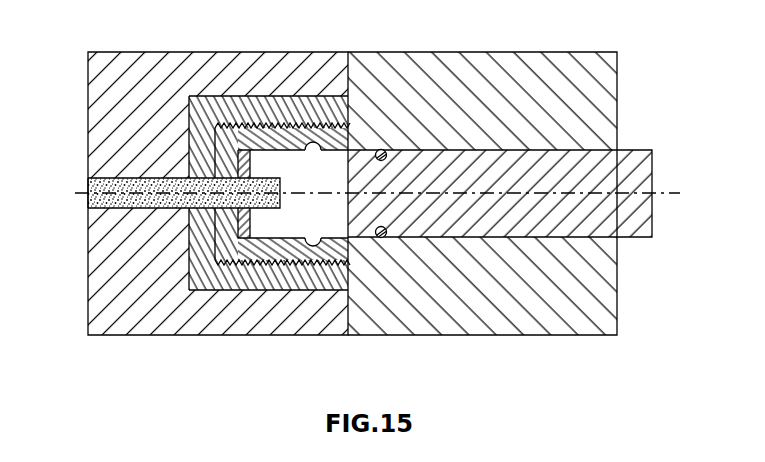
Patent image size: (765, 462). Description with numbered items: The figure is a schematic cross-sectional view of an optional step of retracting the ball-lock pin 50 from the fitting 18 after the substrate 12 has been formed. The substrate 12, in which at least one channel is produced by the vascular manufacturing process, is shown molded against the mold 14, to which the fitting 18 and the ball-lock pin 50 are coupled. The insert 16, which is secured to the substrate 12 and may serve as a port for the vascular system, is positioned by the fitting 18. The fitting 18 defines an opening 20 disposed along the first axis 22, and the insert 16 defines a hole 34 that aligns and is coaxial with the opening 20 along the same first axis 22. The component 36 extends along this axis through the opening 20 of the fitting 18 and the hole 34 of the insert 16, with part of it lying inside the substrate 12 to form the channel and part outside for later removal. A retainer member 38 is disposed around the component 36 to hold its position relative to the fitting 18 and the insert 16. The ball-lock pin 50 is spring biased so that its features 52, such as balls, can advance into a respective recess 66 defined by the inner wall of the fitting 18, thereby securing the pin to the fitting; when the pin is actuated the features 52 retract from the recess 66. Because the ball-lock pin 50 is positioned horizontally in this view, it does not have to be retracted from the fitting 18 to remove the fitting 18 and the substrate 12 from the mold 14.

The substrate 12 is at (97, 323).
The mold 14 is at (608, 92).
The insert 16 is at (215, 113).
The fitting 18 is at (252, 136).
The opening 20 is at (235, 210).
The first axis 22 is at (82, 193).
The hole 34 is at (190, 212).
The component 36 is at (92, 212).
The retainer member 38 is at (192, 96).
The ball-lock pin 50 is at (645, 166).
The features 52 is at (384, 150).
The recess 66 is at (311, 238).